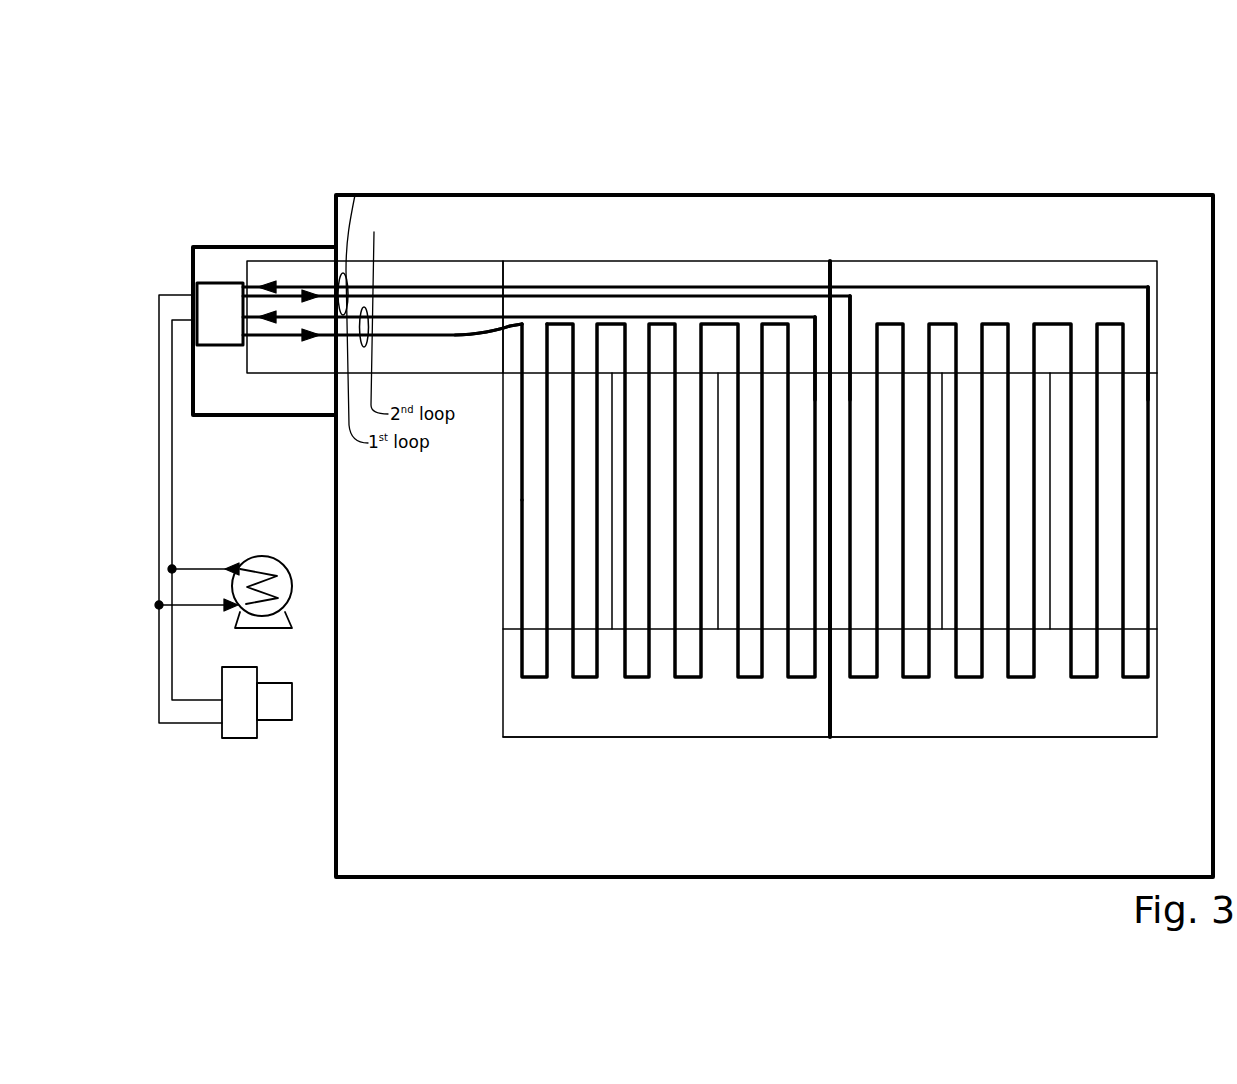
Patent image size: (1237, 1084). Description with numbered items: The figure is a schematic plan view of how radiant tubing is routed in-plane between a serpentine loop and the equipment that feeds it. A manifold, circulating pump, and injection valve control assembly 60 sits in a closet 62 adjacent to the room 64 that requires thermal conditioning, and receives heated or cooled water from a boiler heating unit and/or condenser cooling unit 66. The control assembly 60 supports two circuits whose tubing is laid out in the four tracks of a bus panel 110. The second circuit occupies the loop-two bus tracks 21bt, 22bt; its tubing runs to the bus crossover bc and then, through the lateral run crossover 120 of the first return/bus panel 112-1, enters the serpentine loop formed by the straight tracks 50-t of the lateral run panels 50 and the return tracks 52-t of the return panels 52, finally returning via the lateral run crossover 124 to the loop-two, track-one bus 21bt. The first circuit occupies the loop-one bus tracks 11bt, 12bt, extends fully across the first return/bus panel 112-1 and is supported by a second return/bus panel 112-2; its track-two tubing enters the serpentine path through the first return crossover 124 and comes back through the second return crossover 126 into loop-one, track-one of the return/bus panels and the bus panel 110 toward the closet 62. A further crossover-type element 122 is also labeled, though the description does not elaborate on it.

The closet 62 is at (270, 245).
The room 64 is at (758, 195).
The manifold, circulating pump, and injection valve control assembly 60 is at (215, 347).
The boiler heating unit and/or condenser cooling unit 66 is at (290, 733).
The bus crossover bc is at (488, 330).
The first return/bus panel 112-1 is at (663, 283).
The second return/bus panel 112-2 is at (998, 310).
The bus panel 110 is at (483, 380).
The return panels 52 is at (678, 748).
The loop-1, track-1 bus track 11bt is at (407, 288).
The loop-1, track-2 bus track 12bt is at (365, 296).
The loop-2, track-1 bus track 21bt is at (423, 316).
The loop-2, track-2 bus track 22bt is at (388, 334).
The straight tracks 50-t is at (517, 537).
The return tracks 52-t is at (522, 677).
The lateral run panels 50 is at (496, 578).
The lateral run crossover 120 is at (523, 334).
The outlet connection 122 is at (817, 314).
The lateral run crossover 124 is at (858, 305).
The second return crossover 126 is at (1131, 294).